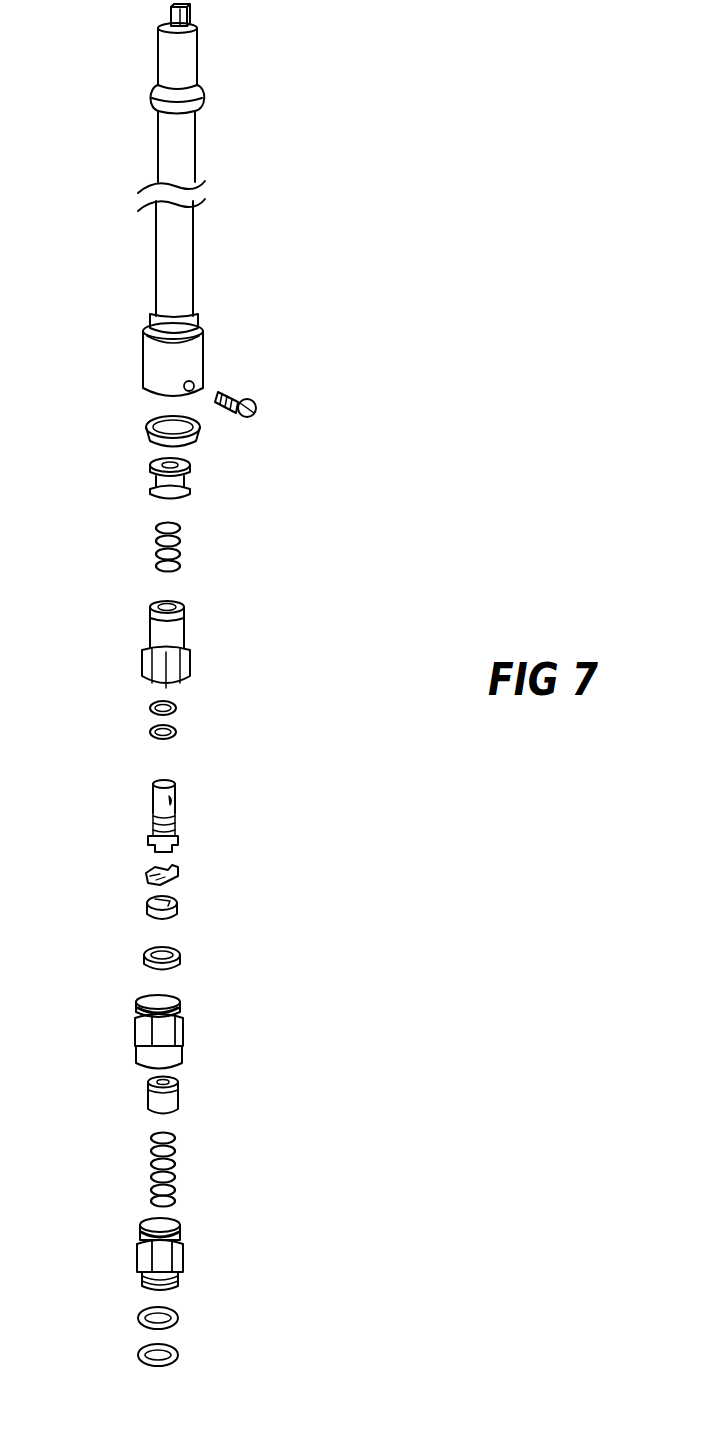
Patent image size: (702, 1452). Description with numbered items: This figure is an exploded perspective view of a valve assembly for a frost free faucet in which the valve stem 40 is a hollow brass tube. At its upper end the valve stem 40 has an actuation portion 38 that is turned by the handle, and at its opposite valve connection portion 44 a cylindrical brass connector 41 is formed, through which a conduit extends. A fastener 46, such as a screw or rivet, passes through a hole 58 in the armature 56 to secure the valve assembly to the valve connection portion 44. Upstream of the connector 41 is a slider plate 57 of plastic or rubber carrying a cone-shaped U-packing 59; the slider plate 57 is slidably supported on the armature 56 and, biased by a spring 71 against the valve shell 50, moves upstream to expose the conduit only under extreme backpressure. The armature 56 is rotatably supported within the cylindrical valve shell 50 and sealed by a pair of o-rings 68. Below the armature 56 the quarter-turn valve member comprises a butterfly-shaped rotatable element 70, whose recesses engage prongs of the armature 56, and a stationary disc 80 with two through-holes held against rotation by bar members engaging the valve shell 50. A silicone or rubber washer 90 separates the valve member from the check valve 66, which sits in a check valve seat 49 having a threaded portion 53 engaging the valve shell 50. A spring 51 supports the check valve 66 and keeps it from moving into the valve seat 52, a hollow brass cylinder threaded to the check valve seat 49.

The actuation portion 38 is at (190, 13).
The valve stem 40 is at (185, 258).
The valve connection portion 44 is at (158, 330).
The connector 41 is at (200, 347).
The fastener 46 is at (262, 407).
The U-packing 59 is at (150, 433).
The slider plate 57 is at (190, 483).
The spring 71 is at (182, 538).
The valve shell 50 is at (178, 632).
The o-rings 68 is at (176, 708).
The armature 56 is at (178, 807).
The rotatable element 70 is at (182, 872).
The stationary disc 80 is at (178, 911).
The washer 90 is at (180, 962).
The threaded portion 53 is at (135, 1010).
The check valve seat 49 is at (183, 1052).
The check valve 66 is at (182, 1095).
The spring 51 is at (177, 1172).
The valve seat 52 is at (185, 1252).
The hole 58 is at (178, 1322).